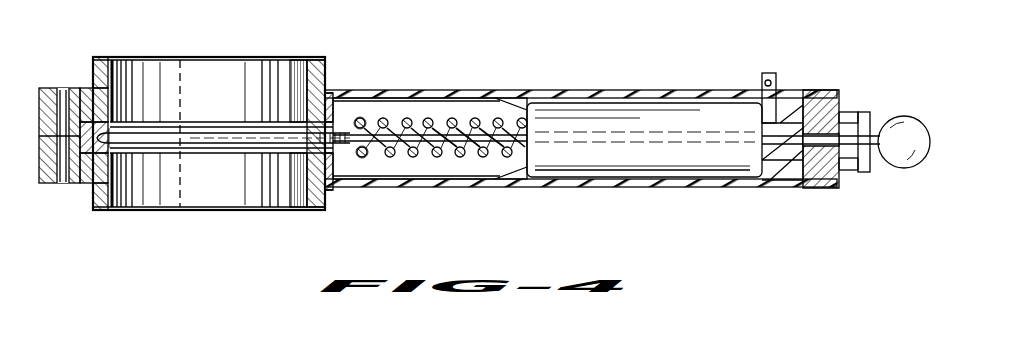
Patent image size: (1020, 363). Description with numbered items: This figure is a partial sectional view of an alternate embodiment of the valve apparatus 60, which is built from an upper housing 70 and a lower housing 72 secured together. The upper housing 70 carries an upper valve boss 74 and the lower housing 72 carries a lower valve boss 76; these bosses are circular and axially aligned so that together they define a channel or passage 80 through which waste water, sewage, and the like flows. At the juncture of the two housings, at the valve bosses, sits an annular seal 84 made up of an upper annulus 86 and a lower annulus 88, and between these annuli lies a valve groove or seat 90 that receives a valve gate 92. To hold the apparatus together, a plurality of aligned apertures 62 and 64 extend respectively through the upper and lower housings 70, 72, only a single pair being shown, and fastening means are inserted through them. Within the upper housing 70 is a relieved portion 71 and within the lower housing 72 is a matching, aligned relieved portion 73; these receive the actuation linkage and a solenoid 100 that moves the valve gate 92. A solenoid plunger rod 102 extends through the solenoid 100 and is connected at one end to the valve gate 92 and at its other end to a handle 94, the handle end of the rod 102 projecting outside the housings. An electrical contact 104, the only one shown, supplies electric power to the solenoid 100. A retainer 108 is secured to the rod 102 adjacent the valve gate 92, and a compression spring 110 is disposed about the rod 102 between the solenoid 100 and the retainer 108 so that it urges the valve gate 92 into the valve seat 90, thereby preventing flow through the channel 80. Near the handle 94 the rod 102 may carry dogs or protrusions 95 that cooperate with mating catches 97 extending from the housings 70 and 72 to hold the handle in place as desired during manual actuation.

The valve apparatus 60 is at (504, 206).
The aligned aperture 62 is at (75, 88).
The aligned aperture 64 is at (69, 183).
The upper housing 70 is at (534, 92).
The relieved portion 71 is at (416, 102).
The lower housing 72 is at (510, 185).
The relieved portion 73 is at (430, 183).
The upper valve boss 74 is at (325, 90).
The lower valve boss 76 is at (325, 186).
The channel or passage 80 is at (213, 76).
The seal 84 is at (162, 122).
The upper annulus 86 is at (220, 122).
The lower annulus 88 is at (256, 151).
The valve groove or seat 90 is at (134, 146).
The valve gate 92 is at (206, 146).
The handle 94 is at (912, 120).
The dogs or protrusions 95 is at (880, 106).
The mating catches 97 is at (848, 170).
The solenoid 100 is at (613, 172).
The solenoid plunger rod 102 is at (452, 148).
The electrical contact 104 is at (764, 84).
The retainer 108 is at (356, 151).
The compression spring 110 is at (397, 118).